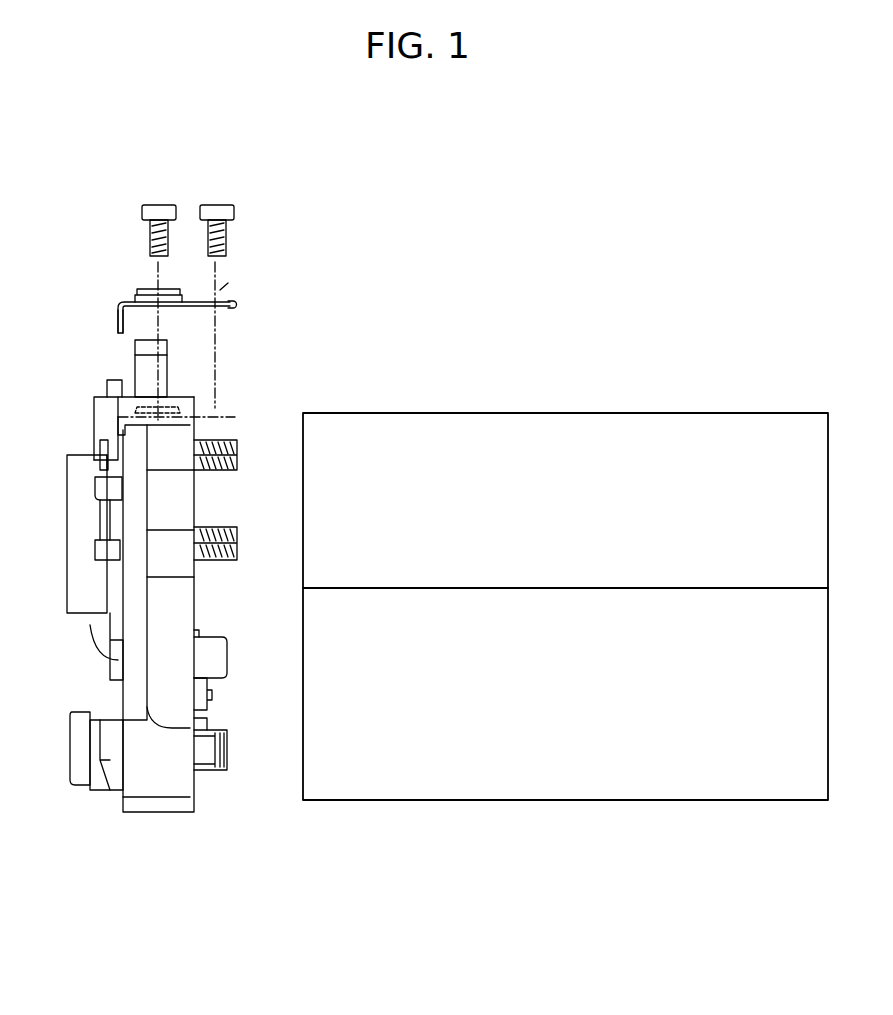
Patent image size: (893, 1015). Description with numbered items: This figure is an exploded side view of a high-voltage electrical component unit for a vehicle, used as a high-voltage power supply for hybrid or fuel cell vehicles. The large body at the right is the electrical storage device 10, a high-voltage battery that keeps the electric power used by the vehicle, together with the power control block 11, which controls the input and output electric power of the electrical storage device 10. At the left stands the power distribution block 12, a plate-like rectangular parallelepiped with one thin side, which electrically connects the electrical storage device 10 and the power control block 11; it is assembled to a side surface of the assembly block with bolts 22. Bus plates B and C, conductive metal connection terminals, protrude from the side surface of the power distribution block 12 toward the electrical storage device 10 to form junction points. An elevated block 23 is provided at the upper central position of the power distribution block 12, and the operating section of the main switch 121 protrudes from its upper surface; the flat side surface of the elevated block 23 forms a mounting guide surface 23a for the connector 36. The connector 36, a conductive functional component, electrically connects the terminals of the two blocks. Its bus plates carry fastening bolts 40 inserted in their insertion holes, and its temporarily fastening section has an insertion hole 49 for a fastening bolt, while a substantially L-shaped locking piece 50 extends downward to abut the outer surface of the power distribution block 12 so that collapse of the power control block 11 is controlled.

The electrical storage device 10 is at (537, 806).
The power control block 11 is at (532, 403).
The power distribution block 12 is at (196, 392).
The bolts 22 is at (240, 465).
The elevated block 23 is at (125, 395).
The mounting guide surface 23a is at (107, 408).
The connector 36 is at (228, 283).
The fastening bolts 40 is at (158, 208).
The insertion hole 49 is at (233, 312).
The locking piece 50 is at (118, 318).
The main switch 121 is at (138, 348).
The bus plate B is at (228, 658).
The bus plate C is at (228, 752).